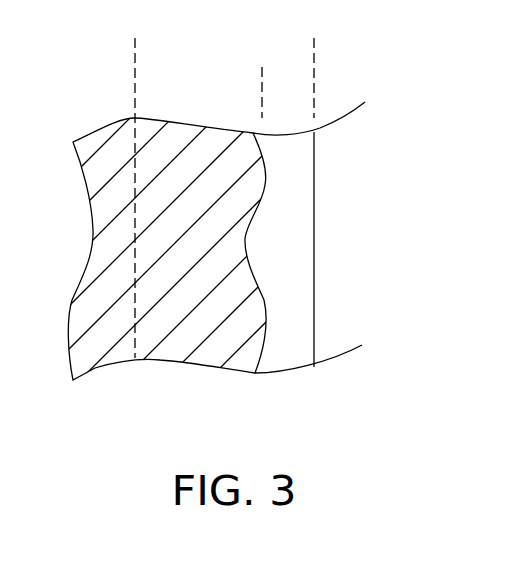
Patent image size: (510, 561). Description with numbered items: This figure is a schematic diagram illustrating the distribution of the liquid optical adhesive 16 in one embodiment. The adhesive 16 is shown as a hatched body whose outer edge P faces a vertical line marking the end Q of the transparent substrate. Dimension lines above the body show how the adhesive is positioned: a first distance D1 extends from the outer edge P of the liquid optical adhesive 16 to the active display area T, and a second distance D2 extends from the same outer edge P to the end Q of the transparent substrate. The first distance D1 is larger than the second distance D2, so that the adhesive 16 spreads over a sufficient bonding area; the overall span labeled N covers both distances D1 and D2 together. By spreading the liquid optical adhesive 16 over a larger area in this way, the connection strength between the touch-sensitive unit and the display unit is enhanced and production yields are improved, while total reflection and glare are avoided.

The liquid optical adhesive 16 is at (158, 231).
The active display area T is at (135, 53).
The distance N is at (135, 53).
The first distance D1 is at (135, 75).
The second distance D2 is at (262, 75).
The end of the transparent substrate Q is at (316, 246).
The outer edge of the liquid optical adhesive P is at (265, 300).